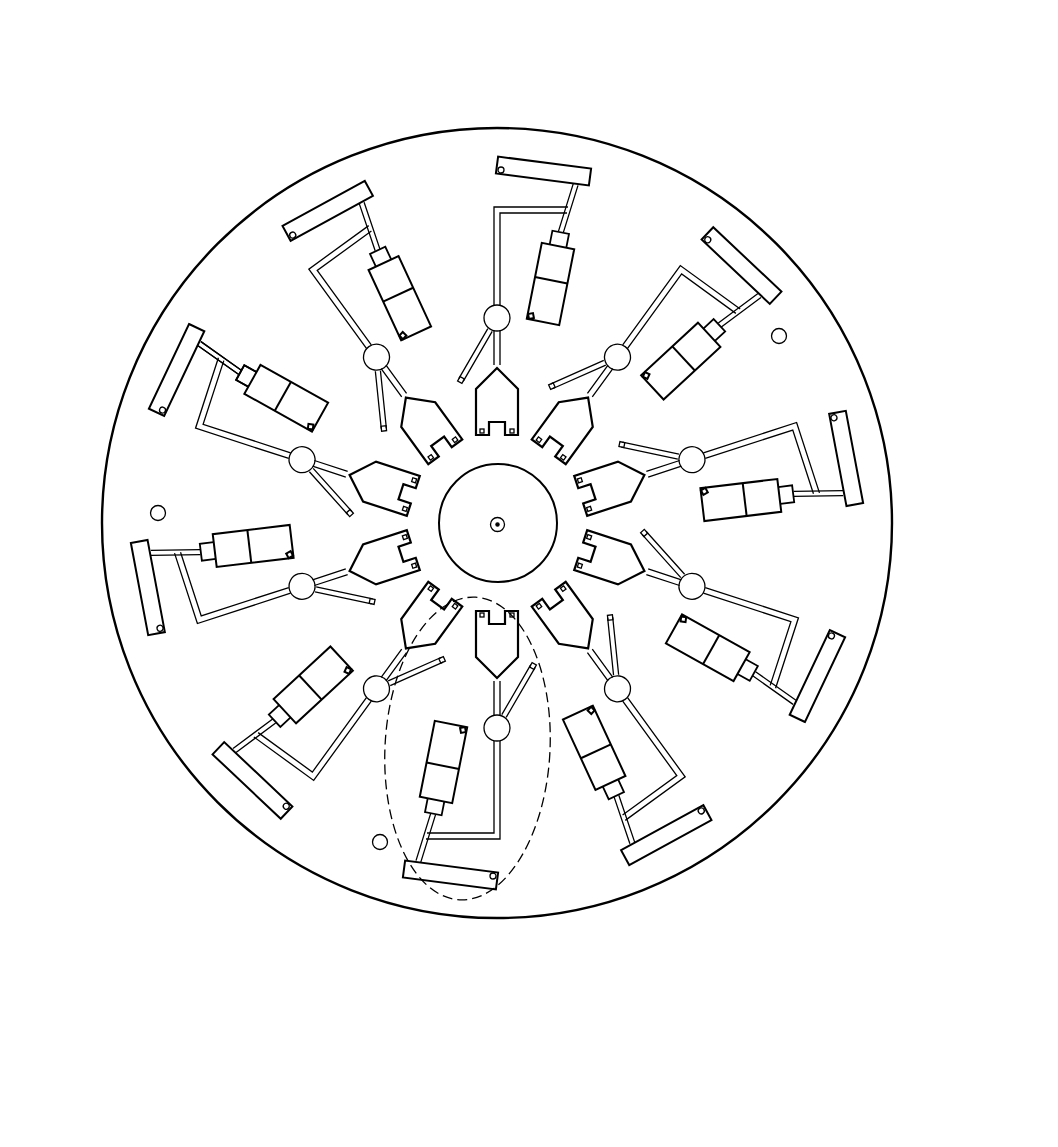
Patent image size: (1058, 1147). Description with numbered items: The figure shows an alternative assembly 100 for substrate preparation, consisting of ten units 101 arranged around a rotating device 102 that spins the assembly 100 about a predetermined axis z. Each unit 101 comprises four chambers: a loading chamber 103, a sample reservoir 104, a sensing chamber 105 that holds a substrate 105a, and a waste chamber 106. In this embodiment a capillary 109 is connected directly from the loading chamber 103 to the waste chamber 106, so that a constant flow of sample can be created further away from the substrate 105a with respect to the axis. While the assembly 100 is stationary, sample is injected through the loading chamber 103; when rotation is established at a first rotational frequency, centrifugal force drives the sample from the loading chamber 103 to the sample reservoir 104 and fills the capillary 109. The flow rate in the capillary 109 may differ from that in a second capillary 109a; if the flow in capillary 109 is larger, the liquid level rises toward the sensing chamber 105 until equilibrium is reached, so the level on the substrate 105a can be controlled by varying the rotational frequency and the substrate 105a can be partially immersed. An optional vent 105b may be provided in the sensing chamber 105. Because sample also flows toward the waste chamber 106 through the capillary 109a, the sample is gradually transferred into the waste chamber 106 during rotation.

The assembly 100 is at (504, 553).
The unit 101 is at (450, 902).
The rotating device 102 is at (832, 344).
The loading chamber 103 is at (420, 514).
The sample reservoir 104 is at (296, 462).
The sensing chamber 105 is at (303, 416).
The substrate 105a is at (264, 367).
The vent 105b is at (403, 332).
The waste chamber 106 is at (172, 374).
The capillary 109 is at (212, 437).
The capillary 109a is at (218, 362).